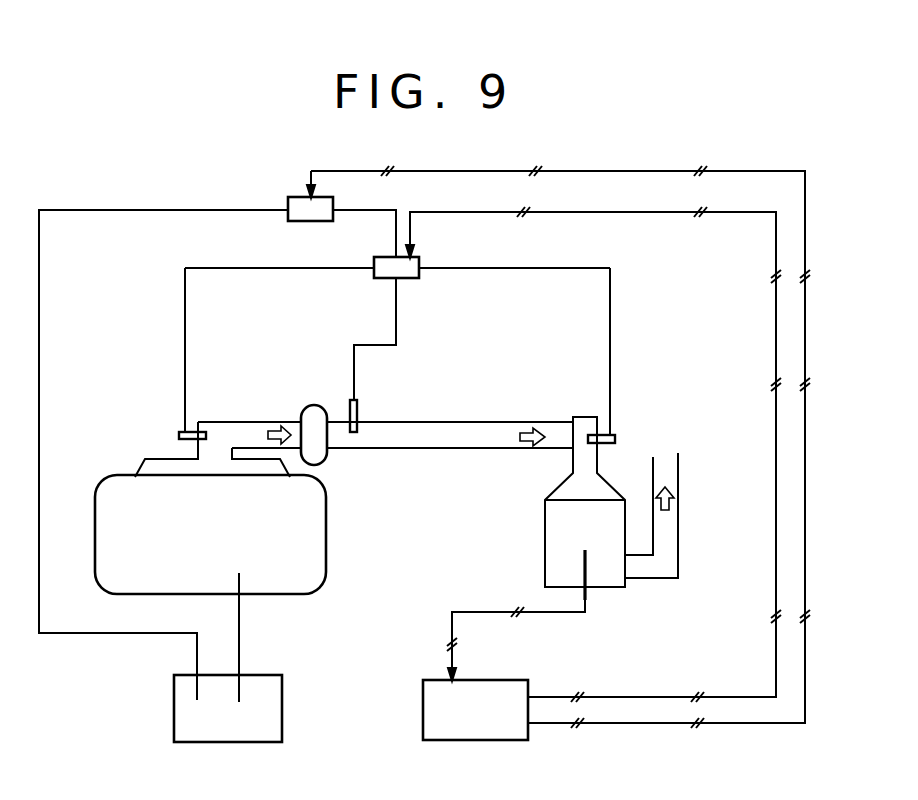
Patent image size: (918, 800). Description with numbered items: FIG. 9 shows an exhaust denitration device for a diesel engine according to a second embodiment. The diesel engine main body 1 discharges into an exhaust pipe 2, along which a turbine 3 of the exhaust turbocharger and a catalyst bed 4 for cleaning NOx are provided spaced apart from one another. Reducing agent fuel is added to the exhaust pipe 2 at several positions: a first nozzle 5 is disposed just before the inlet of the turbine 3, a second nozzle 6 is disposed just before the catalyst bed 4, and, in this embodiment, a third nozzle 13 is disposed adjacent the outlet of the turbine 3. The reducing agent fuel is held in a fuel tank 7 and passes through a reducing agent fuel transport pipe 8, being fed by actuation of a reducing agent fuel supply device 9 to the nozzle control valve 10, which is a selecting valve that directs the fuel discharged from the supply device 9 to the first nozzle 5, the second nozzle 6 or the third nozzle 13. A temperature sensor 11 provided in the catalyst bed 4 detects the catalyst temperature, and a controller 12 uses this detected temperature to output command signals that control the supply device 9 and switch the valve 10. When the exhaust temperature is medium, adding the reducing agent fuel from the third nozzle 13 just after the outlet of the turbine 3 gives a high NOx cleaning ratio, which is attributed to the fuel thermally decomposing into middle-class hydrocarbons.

The diesel engine main body 1 is at (327, 549).
The exhaust pipe 2 is at (427, 450).
The turbine 3 is at (327, 457).
The catalyst bed 4 is at (545, 510).
The first nozzle 5 is at (179, 434).
The second nozzle 6 is at (615, 440).
The fuel tank 7 is at (174, 705).
The reducing agent fuel transport pipe 8 is at (128, 208).
The reducing agent fuel supply device 9 is at (288, 198).
The nozzle control valve 10 is at (419, 268).
The temperature sensor 11 is at (582, 569).
The controller 12 is at (423, 703).
The third nozzle 13 is at (350, 410).